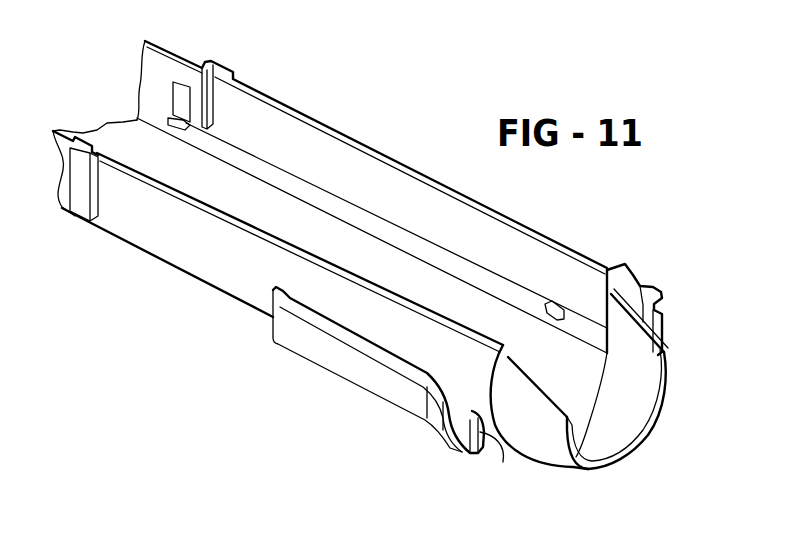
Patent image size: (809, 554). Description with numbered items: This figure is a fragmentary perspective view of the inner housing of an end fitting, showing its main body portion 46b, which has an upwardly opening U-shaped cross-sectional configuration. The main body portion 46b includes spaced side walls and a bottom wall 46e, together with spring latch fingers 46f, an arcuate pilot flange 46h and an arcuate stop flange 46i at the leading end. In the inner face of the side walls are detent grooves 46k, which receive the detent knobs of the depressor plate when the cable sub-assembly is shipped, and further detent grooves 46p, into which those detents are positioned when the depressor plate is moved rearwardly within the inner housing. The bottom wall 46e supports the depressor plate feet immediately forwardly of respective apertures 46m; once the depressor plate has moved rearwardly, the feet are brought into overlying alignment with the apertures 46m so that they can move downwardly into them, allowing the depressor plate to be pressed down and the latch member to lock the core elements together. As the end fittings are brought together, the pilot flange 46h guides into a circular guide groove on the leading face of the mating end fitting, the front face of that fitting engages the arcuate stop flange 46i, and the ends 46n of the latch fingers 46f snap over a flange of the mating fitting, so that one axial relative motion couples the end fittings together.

The main body portion 46b is at (227, 278).
The bottom wall 46e is at (366, 250).
The spring latch fingers 46f is at (362, 375).
The arcuate pilot flange 46h is at (663, 397).
The arcuate stop flange 46i is at (530, 462).
The detent grooves 46k is at (215, 106).
The apertures 46m is at (553, 298).
The ends of latch fingers 46n is at (665, 328).
The further detent grooves 46p is at (187, 98).